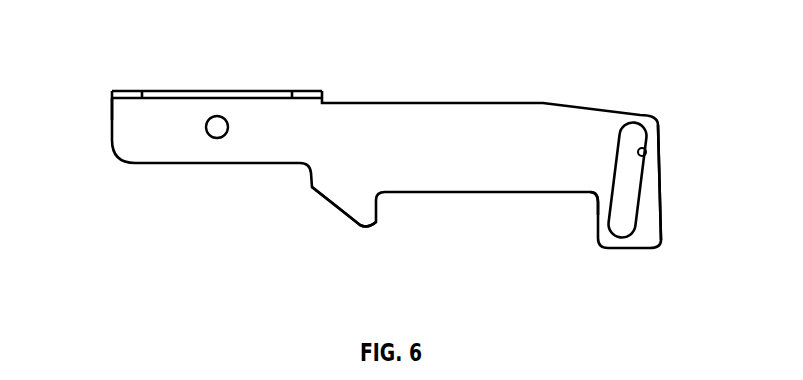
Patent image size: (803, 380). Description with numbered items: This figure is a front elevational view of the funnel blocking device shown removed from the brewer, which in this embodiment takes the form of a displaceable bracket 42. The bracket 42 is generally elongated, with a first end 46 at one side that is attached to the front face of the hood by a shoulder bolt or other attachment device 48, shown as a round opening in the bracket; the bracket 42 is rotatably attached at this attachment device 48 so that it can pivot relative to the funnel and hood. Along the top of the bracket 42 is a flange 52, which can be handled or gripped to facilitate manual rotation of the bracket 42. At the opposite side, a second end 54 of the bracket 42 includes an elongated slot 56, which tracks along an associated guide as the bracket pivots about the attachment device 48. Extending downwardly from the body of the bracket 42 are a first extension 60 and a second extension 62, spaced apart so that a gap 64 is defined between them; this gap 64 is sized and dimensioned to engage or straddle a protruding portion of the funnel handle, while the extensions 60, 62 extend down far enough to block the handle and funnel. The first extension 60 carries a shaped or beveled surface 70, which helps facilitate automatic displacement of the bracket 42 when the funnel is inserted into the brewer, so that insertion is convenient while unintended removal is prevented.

The displaceable bracket 42 is at (439, 89).
The first end 46 is at (110, 126).
The attachment device 48 is at (218, 120).
The flange 52 is at (166, 90).
The second end 54 is at (675, 201).
The elongated slot 56 is at (646, 152).
The first extension 60 is at (333, 190).
The second extension 62 is at (645, 237).
The gap 64 is at (590, 197).
The beveled surface 70 is at (346, 218).